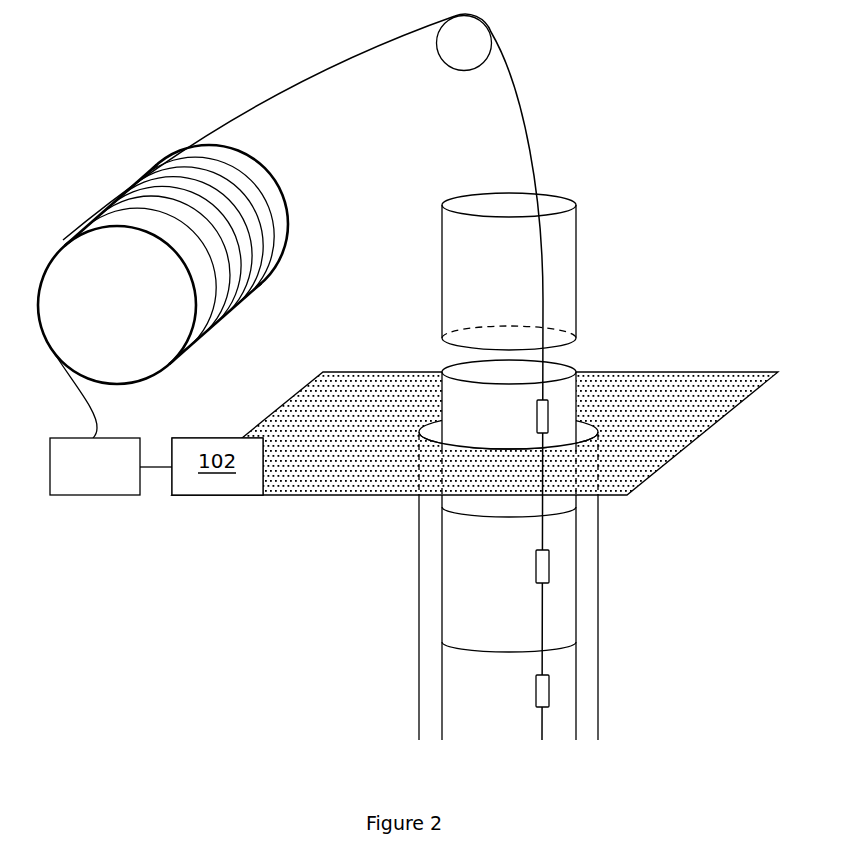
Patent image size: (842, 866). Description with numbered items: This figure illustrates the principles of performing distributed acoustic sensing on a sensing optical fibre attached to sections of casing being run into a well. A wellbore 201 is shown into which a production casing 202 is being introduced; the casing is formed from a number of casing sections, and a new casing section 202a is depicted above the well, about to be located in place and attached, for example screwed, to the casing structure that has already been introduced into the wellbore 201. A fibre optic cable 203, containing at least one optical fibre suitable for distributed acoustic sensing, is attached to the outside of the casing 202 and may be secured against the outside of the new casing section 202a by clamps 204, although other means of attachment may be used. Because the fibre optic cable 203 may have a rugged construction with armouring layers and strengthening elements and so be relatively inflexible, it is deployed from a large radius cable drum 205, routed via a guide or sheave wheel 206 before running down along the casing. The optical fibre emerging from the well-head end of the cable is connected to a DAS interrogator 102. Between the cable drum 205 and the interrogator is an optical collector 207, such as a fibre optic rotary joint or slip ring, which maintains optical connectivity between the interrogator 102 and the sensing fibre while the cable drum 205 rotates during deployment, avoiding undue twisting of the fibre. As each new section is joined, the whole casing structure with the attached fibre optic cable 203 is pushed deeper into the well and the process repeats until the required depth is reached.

The DAS interrogator 102 is at (236, 473).
The wellbore 201 is at (419, 675).
The production casing 202 is at (577, 695).
The casing section 202a is at (577, 281).
The fibre optic cable 203 is at (518, 107).
The clamps 204 is at (549, 568).
The cable drum 205 is at (130, 311).
The guide/sheave wheel 206 is at (442, 50).
The optical collector 207 is at (113, 473).